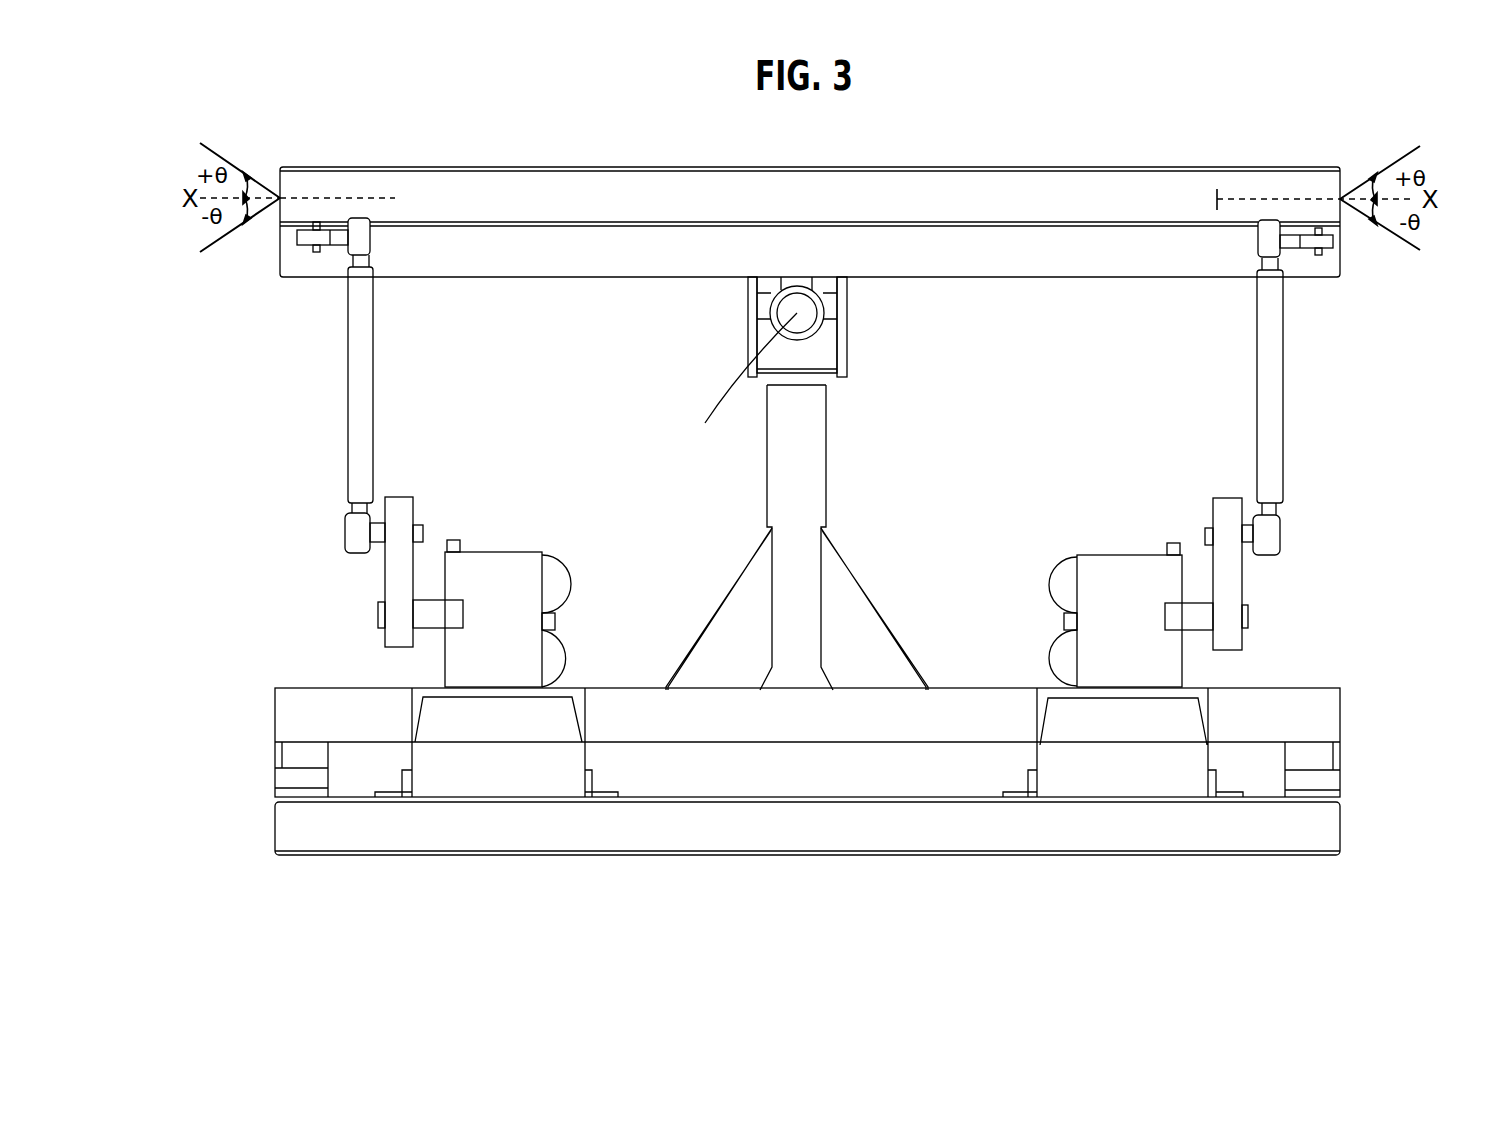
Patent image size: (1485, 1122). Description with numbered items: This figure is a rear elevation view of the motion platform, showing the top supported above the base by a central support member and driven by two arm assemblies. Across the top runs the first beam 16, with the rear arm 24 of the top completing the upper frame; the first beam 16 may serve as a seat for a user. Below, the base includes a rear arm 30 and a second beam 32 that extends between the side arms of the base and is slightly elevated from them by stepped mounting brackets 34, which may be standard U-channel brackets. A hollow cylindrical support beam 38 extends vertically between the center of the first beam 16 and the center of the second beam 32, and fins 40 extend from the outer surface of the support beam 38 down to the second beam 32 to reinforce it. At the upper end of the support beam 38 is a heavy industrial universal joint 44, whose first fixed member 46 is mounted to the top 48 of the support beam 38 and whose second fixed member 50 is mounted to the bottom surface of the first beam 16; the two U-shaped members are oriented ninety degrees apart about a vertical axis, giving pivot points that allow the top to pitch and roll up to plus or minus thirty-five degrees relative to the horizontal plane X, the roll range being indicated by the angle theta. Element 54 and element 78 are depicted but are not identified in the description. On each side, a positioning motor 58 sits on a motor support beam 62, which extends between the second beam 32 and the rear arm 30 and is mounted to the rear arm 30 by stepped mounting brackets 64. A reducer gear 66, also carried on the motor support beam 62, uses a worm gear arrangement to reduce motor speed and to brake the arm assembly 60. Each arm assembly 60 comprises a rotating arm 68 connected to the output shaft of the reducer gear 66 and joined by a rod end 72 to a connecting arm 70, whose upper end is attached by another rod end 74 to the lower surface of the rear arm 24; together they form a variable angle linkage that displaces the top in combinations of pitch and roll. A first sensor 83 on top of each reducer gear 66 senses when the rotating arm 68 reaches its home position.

The first beam 16 is at (958, 268).
The rear arm 24 is at (906, 186).
The rear arm 30 is at (750, 832).
The second beam 32 is at (985, 712).
The stepped mounting brackets 34 is at (290, 757).
The support beam 38 is at (820, 470).
The fins 40 is at (725, 625).
The joint 44 is at (782, 283).
The first fixed member 46 is at (843, 330).
The top 48 is at (820, 372).
The second fixed member 50 is at (796, 287).
The bearing 54 is at (830, 296).
The positioning motors 58 is at (437, 598).
The arm assemblies 60 is at (798, 561).
The motor support beams 62 is at (576, 690).
The stepped mounting brackets 64 is at (450, 790).
The reducer gear 66 is at (500, 552).
The rotating arm 68 is at (390, 575).
The connecting arm 70 is at (372, 338).
The rod end 72 is at (336, 531).
The rod end 74 is at (275, 244).
The pin 78 is at (378, 615).
The first sensors 83 is at (456, 540).